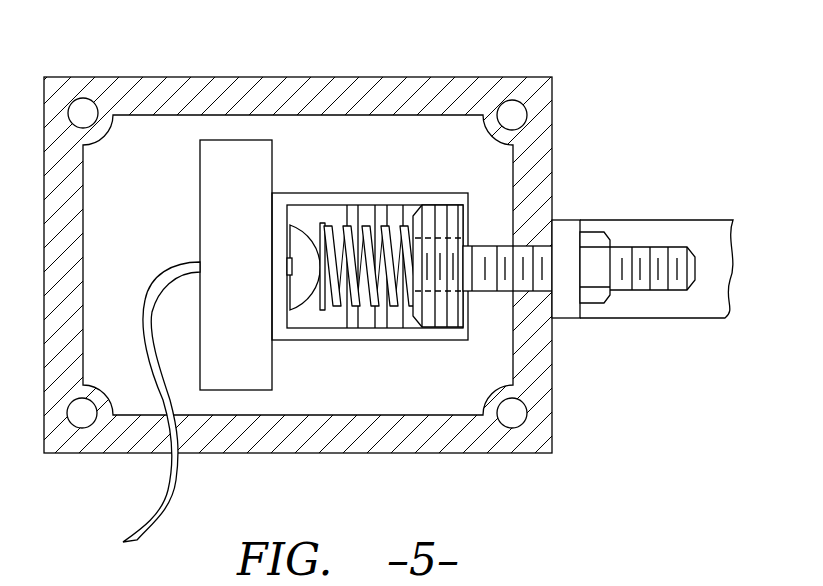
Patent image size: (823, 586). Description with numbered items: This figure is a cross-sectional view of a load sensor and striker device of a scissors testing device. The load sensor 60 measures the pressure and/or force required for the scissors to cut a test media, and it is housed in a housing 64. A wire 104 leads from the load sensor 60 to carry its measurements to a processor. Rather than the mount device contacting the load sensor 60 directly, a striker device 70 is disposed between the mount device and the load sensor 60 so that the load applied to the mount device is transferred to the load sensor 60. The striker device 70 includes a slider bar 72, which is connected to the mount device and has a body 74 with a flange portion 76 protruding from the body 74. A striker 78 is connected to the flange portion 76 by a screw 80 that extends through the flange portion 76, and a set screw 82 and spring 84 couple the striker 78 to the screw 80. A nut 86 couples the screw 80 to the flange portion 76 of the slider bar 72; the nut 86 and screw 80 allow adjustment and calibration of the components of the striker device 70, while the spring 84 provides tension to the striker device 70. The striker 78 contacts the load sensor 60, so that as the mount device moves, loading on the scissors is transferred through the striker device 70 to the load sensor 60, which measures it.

The load sensor 60 is at (232, 392).
The housing 64 is at (207, 77).
The striker device 70 is at (482, 206).
The slider bar 72 is at (687, 202).
The body 74 is at (677, 318).
The flange portion 76 is at (565, 303).
The striker 78 is at (335, 190).
The screw 80 is at (485, 292).
The set screw 82 is at (438, 215).
The spring 84 is at (370, 223).
The nut 86 is at (595, 240).
The wire 104 is at (140, 518).